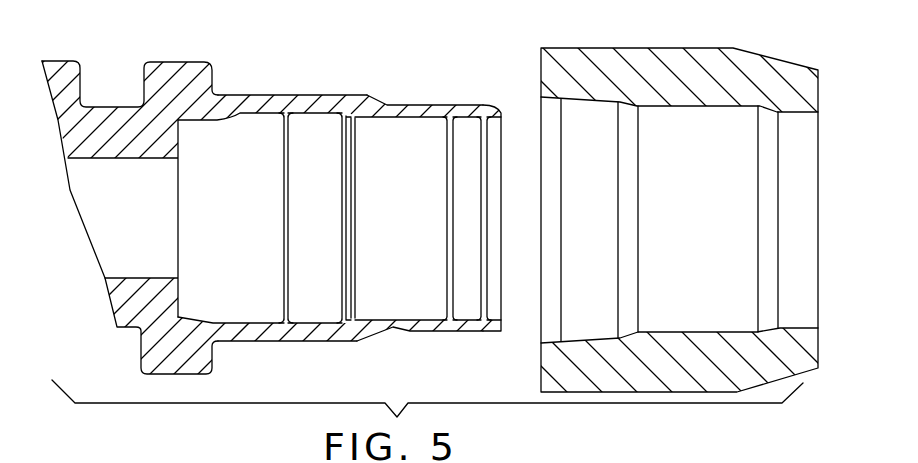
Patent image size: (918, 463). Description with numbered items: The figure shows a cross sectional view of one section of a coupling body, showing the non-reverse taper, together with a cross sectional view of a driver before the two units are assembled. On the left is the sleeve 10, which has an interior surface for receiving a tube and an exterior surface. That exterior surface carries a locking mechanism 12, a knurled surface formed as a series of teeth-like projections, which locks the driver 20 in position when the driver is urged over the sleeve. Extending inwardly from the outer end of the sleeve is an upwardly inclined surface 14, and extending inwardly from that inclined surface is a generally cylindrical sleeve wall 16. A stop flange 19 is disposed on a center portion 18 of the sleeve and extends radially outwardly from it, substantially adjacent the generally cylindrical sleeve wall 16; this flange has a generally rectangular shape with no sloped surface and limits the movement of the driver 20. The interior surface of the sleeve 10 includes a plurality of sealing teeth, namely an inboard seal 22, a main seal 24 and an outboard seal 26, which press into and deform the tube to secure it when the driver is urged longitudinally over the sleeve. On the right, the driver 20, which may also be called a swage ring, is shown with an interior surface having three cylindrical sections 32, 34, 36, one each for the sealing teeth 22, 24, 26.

The sleeve 10 is at (319, 232).
The locking mechanism 12 is at (466, 104).
The upwardly inclined surface 14 is at (377, 101).
The generally cylindrical sleeve wall 16 is at (308, 95).
The center portion 18 is at (113, 148).
The stop flange 19 is at (178, 63).
The driver 20 is at (662, 232).
The inboard seal 22 is at (283, 115).
The main seal 24 is at (338, 120).
The outboard seal 26 is at (447, 119).
The cylindrical section 32 is at (587, 101).
The cylindrical section 34 is at (692, 108).
The cylindrical section 36 is at (797, 114).